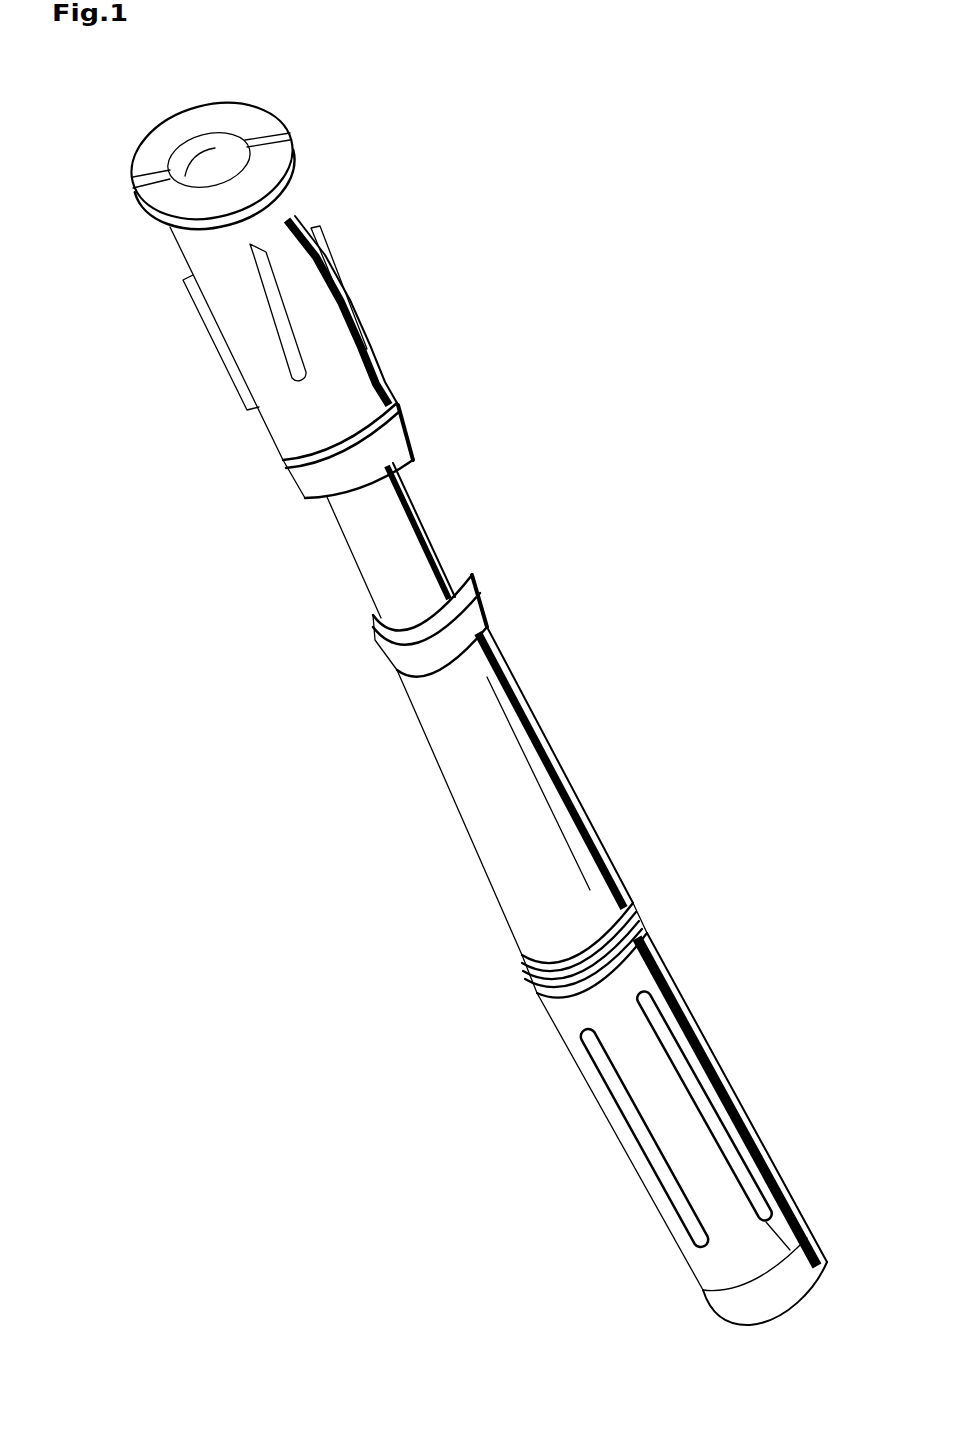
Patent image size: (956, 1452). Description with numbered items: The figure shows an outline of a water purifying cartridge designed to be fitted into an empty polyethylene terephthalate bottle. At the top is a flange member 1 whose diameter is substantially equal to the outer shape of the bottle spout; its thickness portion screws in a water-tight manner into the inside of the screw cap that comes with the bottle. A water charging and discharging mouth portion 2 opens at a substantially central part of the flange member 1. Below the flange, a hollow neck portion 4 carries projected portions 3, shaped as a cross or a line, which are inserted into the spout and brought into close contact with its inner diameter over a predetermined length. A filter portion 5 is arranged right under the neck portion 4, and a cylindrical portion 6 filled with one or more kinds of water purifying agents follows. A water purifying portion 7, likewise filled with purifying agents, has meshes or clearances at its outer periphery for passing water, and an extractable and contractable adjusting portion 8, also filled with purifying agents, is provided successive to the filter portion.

The flange member 1 is at (262, 162).
The water charging and discharging mouth portion 2 is at (220, 160).
The projected portions 3 is at (320, 253).
The hollow neck portion 4 is at (290, 425).
The filter portion 5 is at (283, 465).
The cylindrical portion 6 is at (540, 757).
The water purifying portion 7 is at (677, 1015).
The extractable and contractable adjusting portion 8 is at (380, 567).